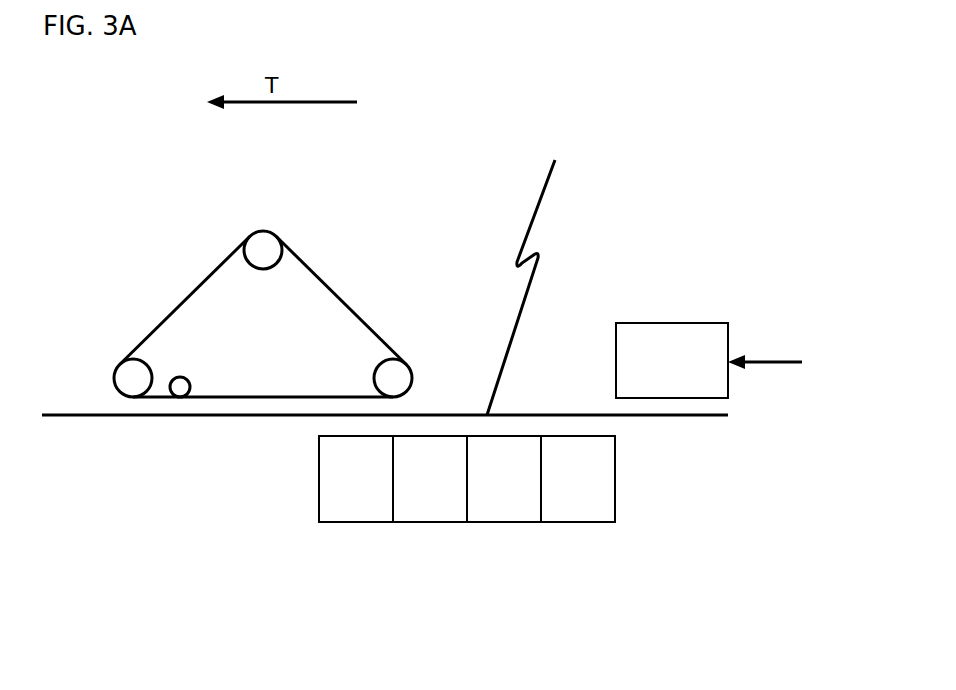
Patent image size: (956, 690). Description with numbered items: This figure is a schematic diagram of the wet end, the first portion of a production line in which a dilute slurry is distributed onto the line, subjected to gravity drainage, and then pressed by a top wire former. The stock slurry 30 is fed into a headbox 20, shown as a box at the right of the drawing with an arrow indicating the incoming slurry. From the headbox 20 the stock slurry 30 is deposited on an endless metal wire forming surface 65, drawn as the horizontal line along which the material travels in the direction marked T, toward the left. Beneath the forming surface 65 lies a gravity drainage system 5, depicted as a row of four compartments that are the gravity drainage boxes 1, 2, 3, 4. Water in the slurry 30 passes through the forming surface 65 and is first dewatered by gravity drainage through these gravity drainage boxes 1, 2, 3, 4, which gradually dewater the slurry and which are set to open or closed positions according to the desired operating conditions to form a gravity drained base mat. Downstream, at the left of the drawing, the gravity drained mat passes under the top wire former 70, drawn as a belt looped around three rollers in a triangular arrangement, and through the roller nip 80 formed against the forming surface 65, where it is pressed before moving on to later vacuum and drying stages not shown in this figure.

The top wire former 70 is at (300, 267).
The endless metal wire forming surface 65 is at (537, 271).
The roller nip 80 is at (194, 447).
The headbox 20 is at (657, 359).
The stock slurry 30 is at (786, 364).
The gravity drainage system 5 is at (467, 536).
The gravity drainage box 1 is at (586, 492).
The gravity drainage box 2 is at (512, 492).
The gravity drainage box 3 is at (438, 492).
The gravity drainage box 4 is at (364, 492).